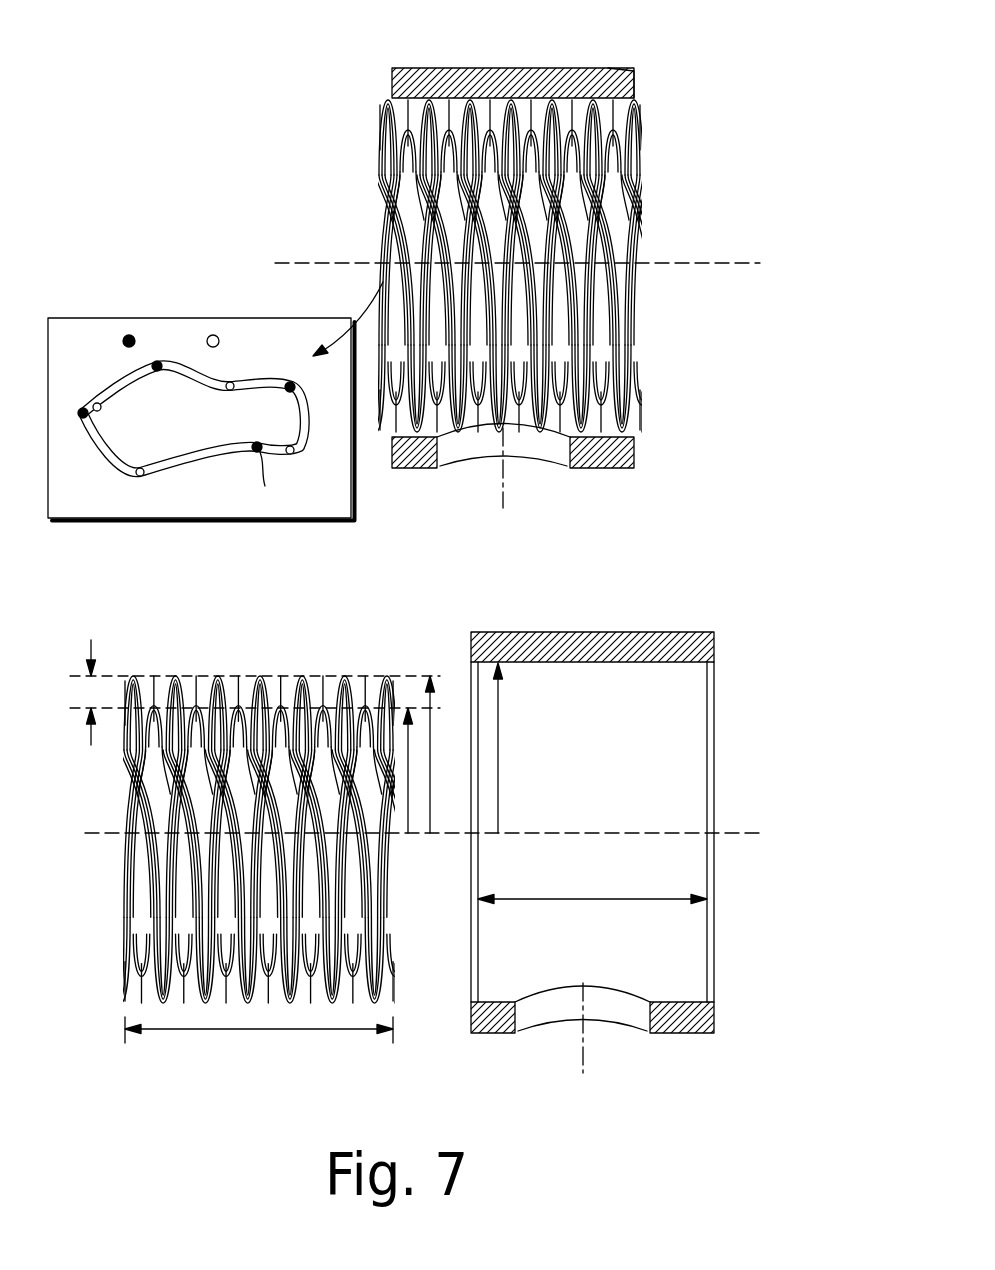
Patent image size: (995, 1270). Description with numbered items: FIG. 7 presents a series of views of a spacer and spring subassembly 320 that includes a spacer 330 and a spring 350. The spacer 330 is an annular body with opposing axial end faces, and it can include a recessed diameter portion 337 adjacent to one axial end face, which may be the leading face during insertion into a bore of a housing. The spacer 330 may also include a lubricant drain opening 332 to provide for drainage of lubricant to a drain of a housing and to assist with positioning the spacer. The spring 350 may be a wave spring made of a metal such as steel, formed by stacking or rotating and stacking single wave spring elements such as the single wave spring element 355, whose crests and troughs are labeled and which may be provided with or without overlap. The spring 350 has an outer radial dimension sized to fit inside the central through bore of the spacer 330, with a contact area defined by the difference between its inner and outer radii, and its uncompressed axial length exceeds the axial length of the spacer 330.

The spacer and spring subassembly 320 is at (332, 29).
The spacer 330 is at (506, 68).
The recessed diameter portion 337 is at (616, 68).
The spring 350 is at (366, 131).
The single wave spring element 355 is at (95, 351).
The lubricant drain opening 332 is at (545, 466).